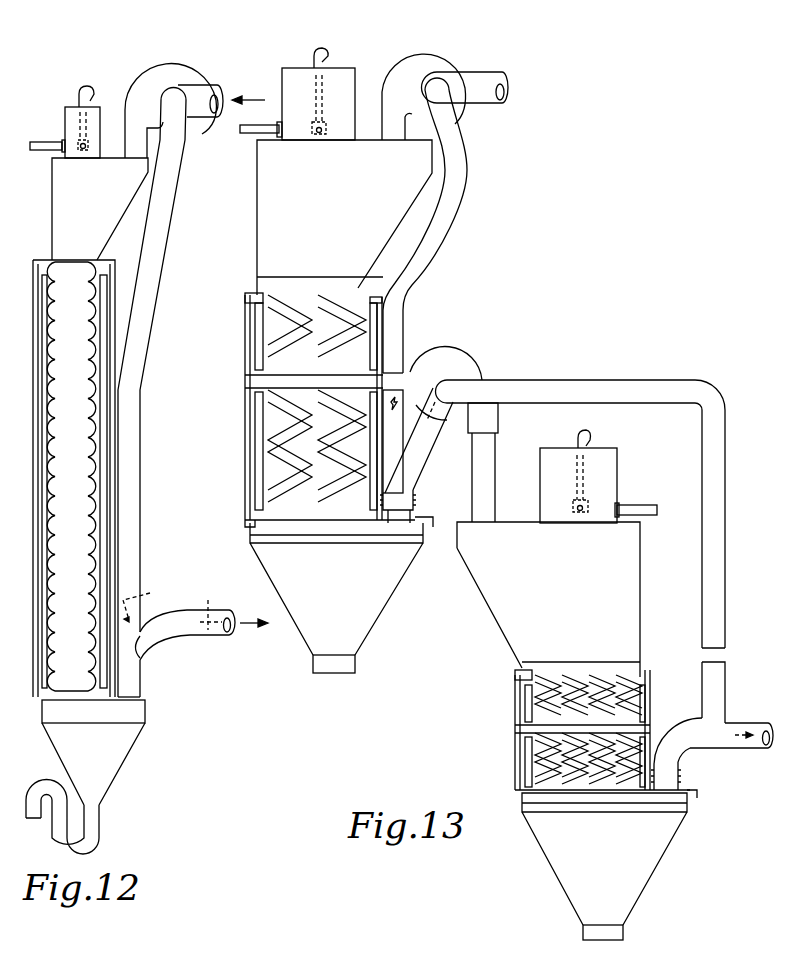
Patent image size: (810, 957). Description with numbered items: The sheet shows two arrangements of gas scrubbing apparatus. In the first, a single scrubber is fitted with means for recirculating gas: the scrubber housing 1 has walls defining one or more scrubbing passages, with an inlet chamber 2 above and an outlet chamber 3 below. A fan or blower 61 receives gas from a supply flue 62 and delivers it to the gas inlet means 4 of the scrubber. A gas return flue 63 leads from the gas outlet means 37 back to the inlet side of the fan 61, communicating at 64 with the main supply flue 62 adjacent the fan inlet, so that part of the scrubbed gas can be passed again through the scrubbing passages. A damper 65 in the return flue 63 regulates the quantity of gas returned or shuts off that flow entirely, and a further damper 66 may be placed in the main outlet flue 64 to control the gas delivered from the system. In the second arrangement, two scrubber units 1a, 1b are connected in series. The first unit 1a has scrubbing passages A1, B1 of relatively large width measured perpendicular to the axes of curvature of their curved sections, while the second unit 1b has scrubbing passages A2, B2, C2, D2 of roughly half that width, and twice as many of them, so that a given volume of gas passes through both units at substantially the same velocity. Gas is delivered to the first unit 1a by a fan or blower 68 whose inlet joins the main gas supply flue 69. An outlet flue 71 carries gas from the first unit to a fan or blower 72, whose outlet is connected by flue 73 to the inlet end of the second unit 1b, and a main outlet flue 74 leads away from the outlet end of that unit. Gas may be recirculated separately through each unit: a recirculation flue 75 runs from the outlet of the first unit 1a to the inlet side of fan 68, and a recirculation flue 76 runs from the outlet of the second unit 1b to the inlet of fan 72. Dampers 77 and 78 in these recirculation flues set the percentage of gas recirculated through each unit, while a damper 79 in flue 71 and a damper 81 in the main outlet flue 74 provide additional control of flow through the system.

In FIG. 12, the scrubber housing 1 is at (74, 476).
In FIG. 13, the first scrubber unit 1a is at (284, 410).
In FIG. 13, the second scrubber unit 1b is at (576, 726).
In FIG. 12, the inlet chamber 2 is at (100, 209).
In FIG. 12, the outlet chamber 3 is at (85, 777).
In FIG. 12, the gas inlet means 4 is at (126, 153).
In FIG. 12, the gas outlet means 37 is at (141, 698).
In FIG. 12, the fan or blower 61 is at (160, 62).
In FIG. 12, the flue 62 is at (193, 82).
In FIG. 12, the gas return flue 63 is at (128, 476).
In FIG. 12, the main outlet flue 64 is at (192, 101).
In FIG. 12, the damper 65 is at (148, 605).
In FIG. 12, the damper 66 is at (211, 607).
In FIG. 13, the fan or blower 68 is at (437, 50).
In FIG. 13, the main gas supply flue 69 is at (480, 72).
In FIG. 13, the outlet flue 71 is at (426, 448).
In FIG. 13, the fan or blower 72 is at (447, 349).
In FIG. 13, the flue 73 is at (496, 459).
In FIG. 13, the main outlet flue 74 is at (718, 749).
In FIG. 13, the recirculation flue 75 is at (412, 283).
In FIG. 13, the recirculation flue 76 is at (599, 514).
In FIG. 13, the damper 77 is at (393, 441).
In FIG. 13, the damper 78 is at (708, 696).
In FIG. 13, the damper 79 is at (425, 427).
In FIG. 13, the damper 81 is at (743, 735).
In FIG. 13, the scrubbing passage A1 is at (279, 356).
In FIG. 13, the scrubbing passage B1 is at (327, 356).
In FIG. 13, the scrubbing passage A2 is at (542, 708).
In FIG. 13, the scrubbing passage B2 is at (570, 708).
In FIG. 13, the scrubbing passage C2 is at (597, 708).
In FIG. 13, the scrubbing passage D2 is at (620, 708).